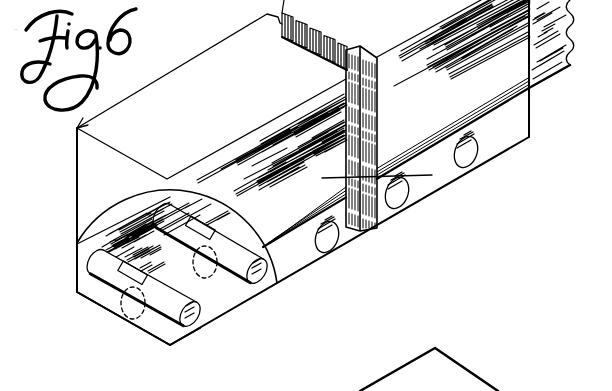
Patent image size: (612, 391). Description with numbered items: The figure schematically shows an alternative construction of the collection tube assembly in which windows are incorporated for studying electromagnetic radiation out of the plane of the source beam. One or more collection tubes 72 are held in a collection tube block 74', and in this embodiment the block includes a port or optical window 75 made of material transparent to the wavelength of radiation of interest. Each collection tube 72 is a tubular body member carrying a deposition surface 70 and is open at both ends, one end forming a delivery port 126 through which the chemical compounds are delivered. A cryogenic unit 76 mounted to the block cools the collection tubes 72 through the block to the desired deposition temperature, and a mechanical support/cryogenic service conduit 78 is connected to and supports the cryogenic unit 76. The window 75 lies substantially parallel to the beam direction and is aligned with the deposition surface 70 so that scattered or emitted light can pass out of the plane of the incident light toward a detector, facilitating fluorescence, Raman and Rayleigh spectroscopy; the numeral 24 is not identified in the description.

The housing block 24 is at (342, 195).
The deposition surface 70 is at (132, 272).
The collection tube 72 is at (257, 287).
The slotted plate portion 74' is at (467, 138).
The optical window 75 is at (133, 316).
The cryogenic unit 76 is at (473, 93).
The mechanical support/cryogenic service conduit 78 is at (547, 78).
The delivery port 126 is at (201, 323).